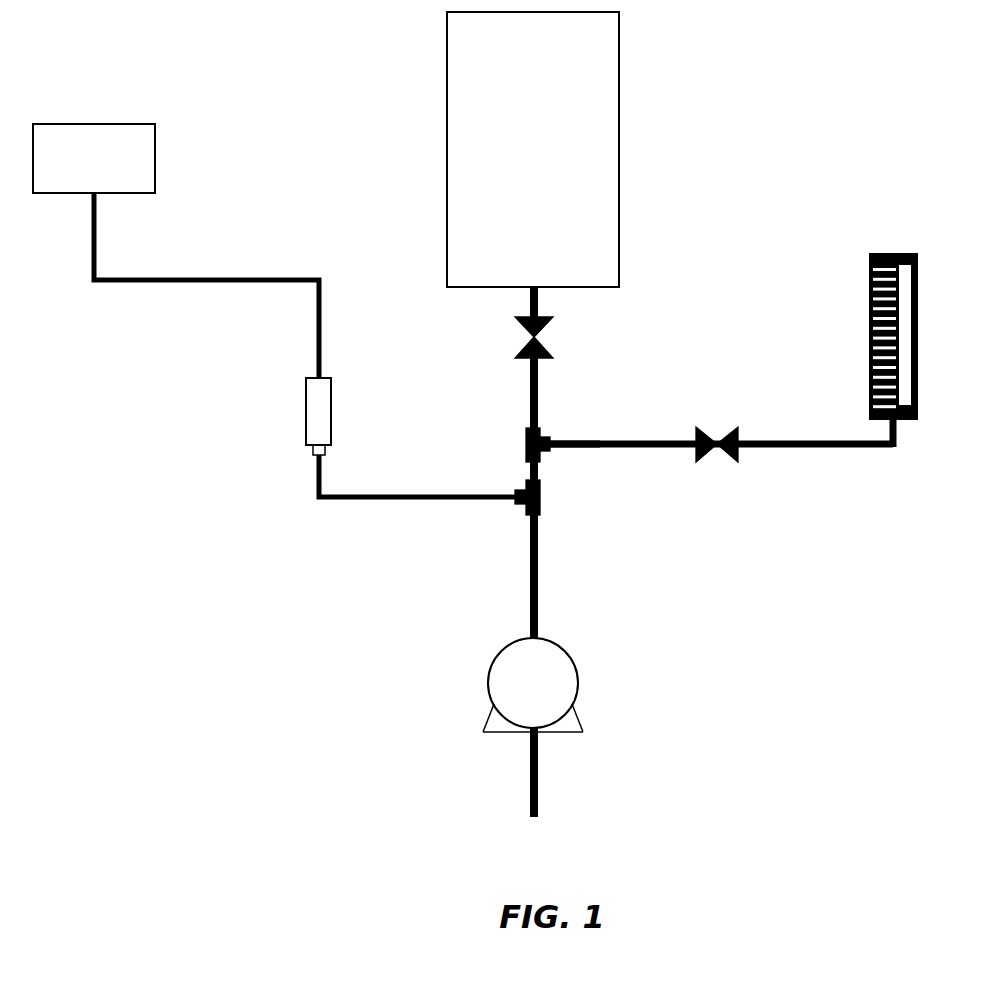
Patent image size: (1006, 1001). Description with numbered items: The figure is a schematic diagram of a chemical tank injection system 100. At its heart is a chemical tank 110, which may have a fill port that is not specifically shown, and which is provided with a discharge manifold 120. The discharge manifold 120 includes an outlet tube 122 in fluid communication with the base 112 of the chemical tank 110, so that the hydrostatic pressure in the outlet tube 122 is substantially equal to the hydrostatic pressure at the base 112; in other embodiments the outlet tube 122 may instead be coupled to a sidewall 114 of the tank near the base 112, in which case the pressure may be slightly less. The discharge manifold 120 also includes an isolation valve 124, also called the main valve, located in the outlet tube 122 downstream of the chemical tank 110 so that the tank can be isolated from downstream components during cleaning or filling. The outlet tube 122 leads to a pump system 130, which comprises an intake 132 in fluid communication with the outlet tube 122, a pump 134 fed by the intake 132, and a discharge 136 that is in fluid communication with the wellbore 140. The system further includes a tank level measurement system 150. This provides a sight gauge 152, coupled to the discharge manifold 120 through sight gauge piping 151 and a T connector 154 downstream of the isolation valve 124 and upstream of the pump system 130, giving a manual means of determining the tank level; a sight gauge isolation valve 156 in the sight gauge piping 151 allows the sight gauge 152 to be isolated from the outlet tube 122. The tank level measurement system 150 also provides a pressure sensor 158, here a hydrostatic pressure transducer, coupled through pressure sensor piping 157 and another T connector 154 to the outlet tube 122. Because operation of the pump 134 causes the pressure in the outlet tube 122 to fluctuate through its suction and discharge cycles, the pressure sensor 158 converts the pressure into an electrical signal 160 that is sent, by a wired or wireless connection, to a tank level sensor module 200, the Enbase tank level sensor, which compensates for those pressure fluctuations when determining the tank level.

The chemical tank injection system 100 is at (910, 89).
The chemical tank 110 is at (619, 62).
The base 112 is at (612, 287).
The sidewall 114 is at (619, 228).
The discharge manifold 120 is at (537, 406).
The outlet tube 122 is at (530, 383).
The isolation valve 124 is at (528, 338).
The pump system 130 is at (362, 667).
The intake 132 is at (537, 598).
The pump 134 is at (578, 717).
The discharge 136 is at (530, 775).
The wellbore 140 is at (523, 849).
The tank level measurement system 150 is at (176, 496).
The sight gauge piping 151 is at (835, 448).
The sight gauge 152 is at (919, 291).
The T connector 154 is at (541, 456).
The sight gauge isolation valve 156 is at (735, 428).
The pressure sensor piping 157 is at (441, 504).
The pressure sensor 158 is at (331, 400).
The electrical signal 160 is at (280, 277).
The tank level sensor module 200 is at (155, 158).